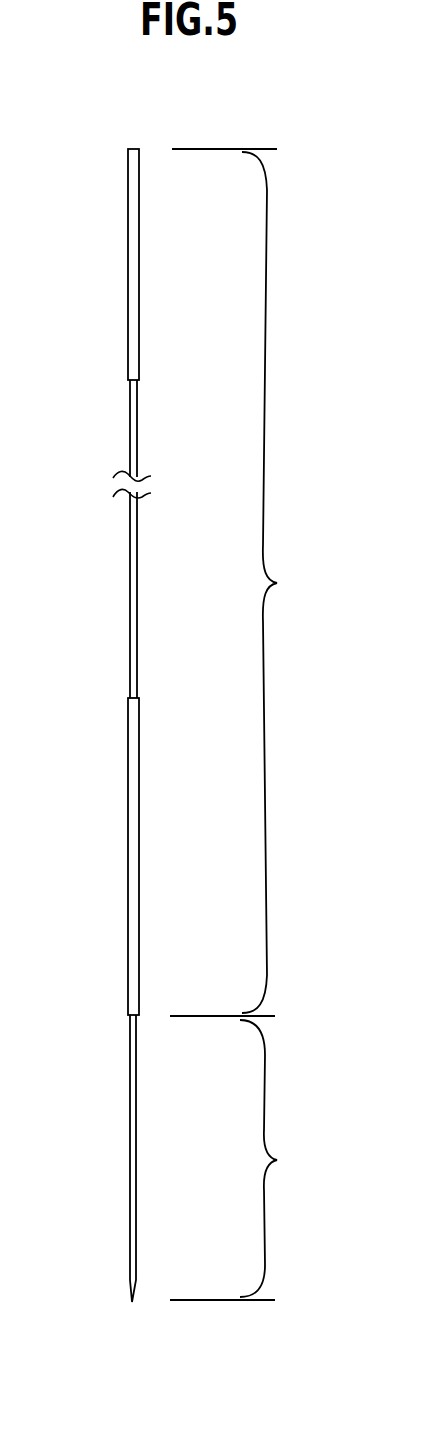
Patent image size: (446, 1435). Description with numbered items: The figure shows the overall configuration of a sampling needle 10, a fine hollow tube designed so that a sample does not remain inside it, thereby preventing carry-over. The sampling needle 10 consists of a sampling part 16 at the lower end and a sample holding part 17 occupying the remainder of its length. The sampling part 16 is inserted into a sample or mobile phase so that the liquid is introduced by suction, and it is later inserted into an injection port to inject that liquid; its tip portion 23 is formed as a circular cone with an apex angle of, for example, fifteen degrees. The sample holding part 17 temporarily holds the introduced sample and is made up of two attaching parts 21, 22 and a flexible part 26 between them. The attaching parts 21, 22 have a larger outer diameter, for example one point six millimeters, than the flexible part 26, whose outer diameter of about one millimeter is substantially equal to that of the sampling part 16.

The sampling needle 10 is at (146, 152).
The attaching part 22 is at (128, 250).
The flexible part 26 is at (130, 593).
The attaching part 21 is at (128, 798).
The tip portion 23 is at (131, 1302).
The sample holding part 17 is at (241, 582).
The sampling part 16 is at (241, 1160).